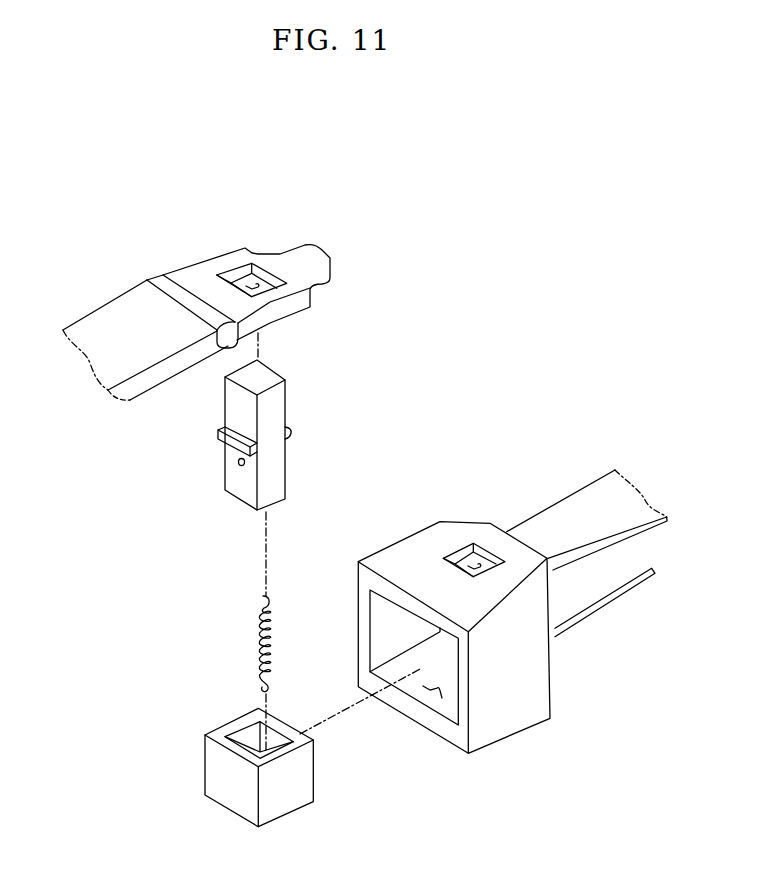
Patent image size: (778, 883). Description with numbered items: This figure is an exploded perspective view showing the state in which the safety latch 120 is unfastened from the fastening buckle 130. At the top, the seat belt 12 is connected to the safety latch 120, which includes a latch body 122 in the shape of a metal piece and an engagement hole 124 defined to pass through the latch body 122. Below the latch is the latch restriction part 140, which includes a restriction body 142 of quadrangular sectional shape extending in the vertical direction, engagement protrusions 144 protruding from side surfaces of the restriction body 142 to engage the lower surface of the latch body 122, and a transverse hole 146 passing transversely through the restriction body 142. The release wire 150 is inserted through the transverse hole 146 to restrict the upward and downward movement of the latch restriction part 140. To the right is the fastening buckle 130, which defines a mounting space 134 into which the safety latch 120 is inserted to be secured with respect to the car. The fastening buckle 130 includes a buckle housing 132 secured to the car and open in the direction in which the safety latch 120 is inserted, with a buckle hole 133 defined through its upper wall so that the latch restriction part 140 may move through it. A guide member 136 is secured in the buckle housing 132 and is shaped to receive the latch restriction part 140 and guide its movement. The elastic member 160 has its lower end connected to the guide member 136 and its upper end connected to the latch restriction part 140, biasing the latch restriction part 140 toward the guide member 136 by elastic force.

The seat belt 12 is at (128, 320).
The safety latch 120 is at (238, 258).
The latch body 122 is at (227, 263).
The engagement hole 124 is at (255, 287).
The fastening buckle 130 is at (454, 612).
The buckle housing 132 is at (403, 555).
The buckle hole 133 is at (480, 562).
The mounting space 134 is at (432, 692).
The guide member 136 is at (302, 785).
The latch restriction part 140 is at (267, 435).
The restriction body 142 is at (275, 415).
The engagement protrusions 144 is at (291, 434).
The transverse hole 146 is at (238, 463).
The release wire 150 is at (597, 610).
The elastic member 160 is at (259, 640).